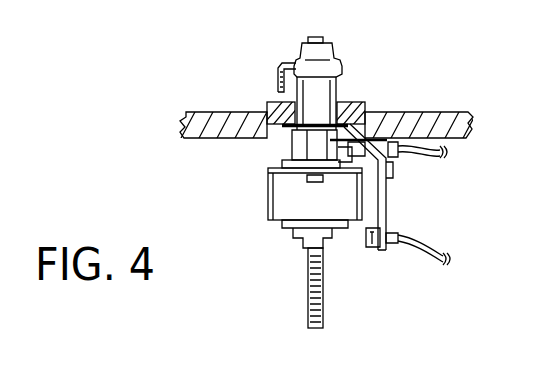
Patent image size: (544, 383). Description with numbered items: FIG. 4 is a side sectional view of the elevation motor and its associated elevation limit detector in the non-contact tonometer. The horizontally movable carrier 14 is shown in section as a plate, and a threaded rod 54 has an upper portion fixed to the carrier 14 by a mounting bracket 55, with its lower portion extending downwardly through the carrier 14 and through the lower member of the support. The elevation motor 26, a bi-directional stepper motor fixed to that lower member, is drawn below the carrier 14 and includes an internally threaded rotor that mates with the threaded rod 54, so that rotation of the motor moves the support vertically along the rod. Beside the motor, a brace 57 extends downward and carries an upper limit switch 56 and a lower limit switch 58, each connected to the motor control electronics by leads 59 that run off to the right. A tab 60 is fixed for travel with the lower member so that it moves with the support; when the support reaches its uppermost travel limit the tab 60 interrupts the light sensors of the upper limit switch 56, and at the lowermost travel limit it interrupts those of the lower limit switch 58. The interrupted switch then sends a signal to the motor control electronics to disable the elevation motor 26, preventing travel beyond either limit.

The carrier 14 is at (193, 123).
The elevation motor 26 is at (293, 198).
The threaded rod 54 is at (308, 296).
The mounting bracket 55 is at (337, 86).
The upper limit switch 56 is at (373, 137).
The brace 57 is at (384, 203).
The lower limit switch 58 is at (387, 221).
The leads 59 is at (428, 150).
The tab 60 is at (387, 172).